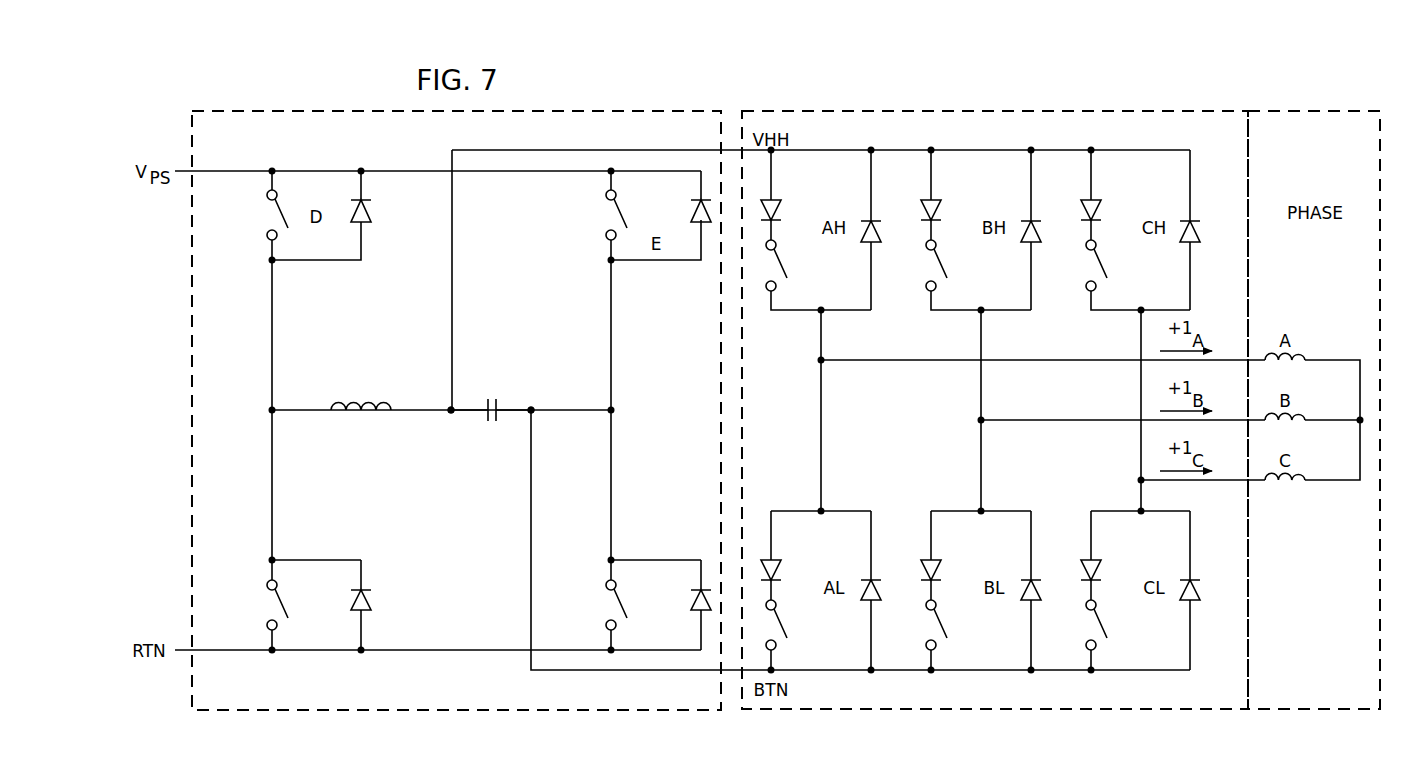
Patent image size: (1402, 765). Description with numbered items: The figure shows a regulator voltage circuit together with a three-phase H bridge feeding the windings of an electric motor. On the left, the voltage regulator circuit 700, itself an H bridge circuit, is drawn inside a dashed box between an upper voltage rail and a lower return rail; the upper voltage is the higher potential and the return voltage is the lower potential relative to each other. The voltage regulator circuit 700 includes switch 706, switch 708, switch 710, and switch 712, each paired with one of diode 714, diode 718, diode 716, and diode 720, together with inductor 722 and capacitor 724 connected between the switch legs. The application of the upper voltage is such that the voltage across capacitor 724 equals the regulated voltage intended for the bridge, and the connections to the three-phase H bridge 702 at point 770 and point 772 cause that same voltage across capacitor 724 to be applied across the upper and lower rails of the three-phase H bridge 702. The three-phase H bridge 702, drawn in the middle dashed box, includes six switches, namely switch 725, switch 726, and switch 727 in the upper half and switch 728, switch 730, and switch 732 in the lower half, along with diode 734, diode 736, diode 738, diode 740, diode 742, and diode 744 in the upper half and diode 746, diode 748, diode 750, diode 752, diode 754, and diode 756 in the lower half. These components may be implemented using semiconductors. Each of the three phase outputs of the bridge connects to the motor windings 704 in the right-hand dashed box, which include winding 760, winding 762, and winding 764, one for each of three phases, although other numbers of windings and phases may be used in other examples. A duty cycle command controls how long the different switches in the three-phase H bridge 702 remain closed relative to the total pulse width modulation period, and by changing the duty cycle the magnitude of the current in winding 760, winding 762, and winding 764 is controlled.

The voltage regulator circuit 700 is at (333, 108).
The three-phase H bridge 702 is at (1248, 101).
The motor windings 704 is at (1381, 101).
The switch 706 is at (266, 216).
The switch 708 is at (605, 216).
The switch 710 is at (266, 607).
The switch 712 is at (605, 607).
The diode 714 is at (374, 205).
The diode 716 is at (373, 598).
The diode 718 is at (690, 210).
The diode 720 is at (690, 595).
The inductor 722 is at (370, 392).
The capacitor 724 is at (488, 397).
The point 770 is at (448, 416).
The point 772 is at (528, 416).
The switch 725 is at (788, 262).
The switch 726 is at (948, 262).
The switch 727 is at (1108, 262).
The switch 728 is at (788, 623).
The switch 730 is at (948, 623).
The switch 732 is at (1108, 623).
The diode 734 is at (776, 200).
The diode 736 is at (871, 221).
The diode 738 is at (936, 200).
The diode 740 is at (1031, 221).
The diode 742 is at (1096, 200).
The diode 744 is at (1191, 221).
The diode 746 is at (776, 560).
The diode 748 is at (871, 602).
The diode 750 is at (936, 560).
The diode 752 is at (1031, 602).
The diode 754 is at (1096, 560).
The diode 756 is at (1191, 602).
The winding 760 is at (1322, 358).
The winding 762 is at (1322, 418).
The winding 764 is at (1322, 483).